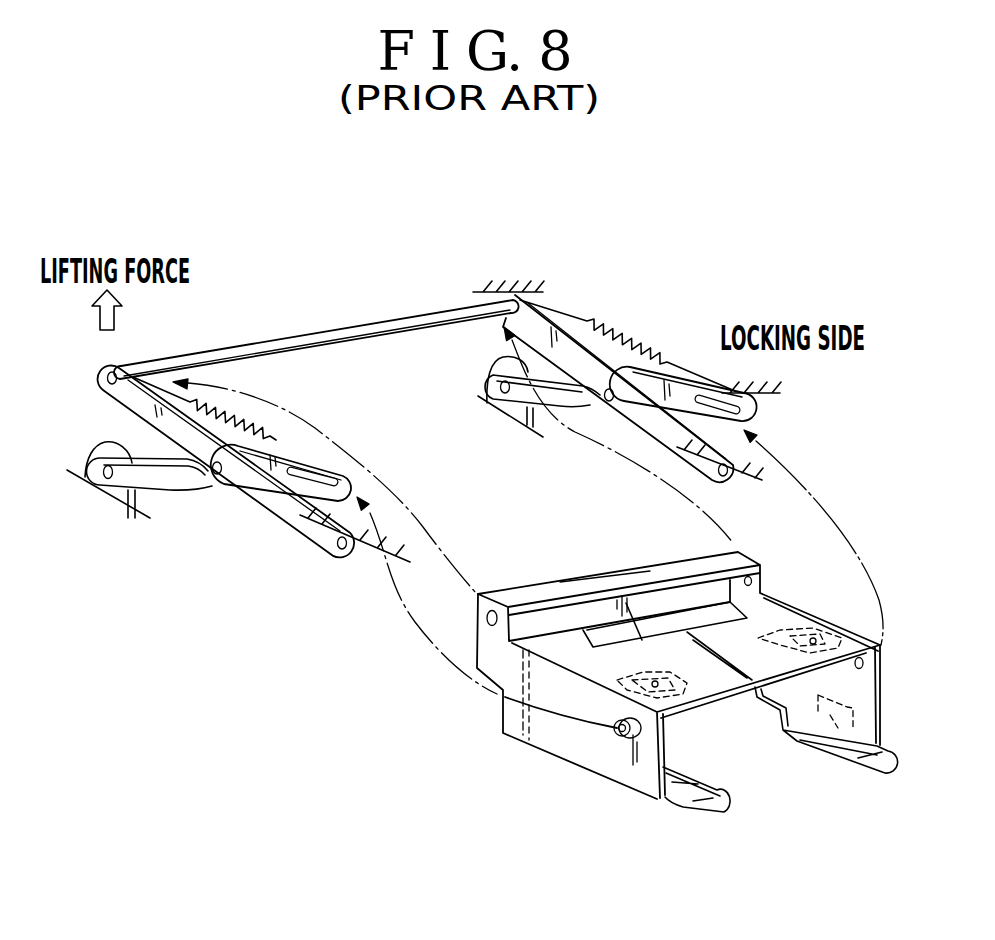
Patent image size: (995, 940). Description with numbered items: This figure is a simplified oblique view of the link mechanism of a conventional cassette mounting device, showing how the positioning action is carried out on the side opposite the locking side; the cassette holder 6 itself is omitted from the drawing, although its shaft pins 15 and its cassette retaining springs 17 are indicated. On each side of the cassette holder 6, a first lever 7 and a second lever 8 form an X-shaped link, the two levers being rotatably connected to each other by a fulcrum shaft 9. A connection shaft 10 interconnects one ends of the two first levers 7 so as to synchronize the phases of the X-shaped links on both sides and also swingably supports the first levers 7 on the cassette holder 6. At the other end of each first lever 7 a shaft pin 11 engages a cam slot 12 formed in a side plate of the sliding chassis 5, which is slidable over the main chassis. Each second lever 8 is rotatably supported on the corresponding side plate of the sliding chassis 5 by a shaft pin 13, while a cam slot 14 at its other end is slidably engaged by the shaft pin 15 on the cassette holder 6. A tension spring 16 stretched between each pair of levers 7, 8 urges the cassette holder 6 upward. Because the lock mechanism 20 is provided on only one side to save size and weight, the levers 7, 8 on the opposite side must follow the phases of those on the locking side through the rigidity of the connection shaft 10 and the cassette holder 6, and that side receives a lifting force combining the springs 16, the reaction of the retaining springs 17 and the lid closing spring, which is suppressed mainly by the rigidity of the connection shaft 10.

The sliding chassis 5 is at (140, 518).
The cassette holder 6 is at (570, 748).
The first lever 7 is at (132, 403).
The second lever 8 is at (184, 488).
The fulcrum shaft 9 is at (224, 488).
The connection shaft 10 is at (335, 330).
The shaft pin 11 is at (341, 556).
The cam slot 12 is at (405, 562).
The shaft pin 13 is at (100, 486).
The cam slot 14 is at (333, 477).
The shaft pin 15 is at (621, 742).
The tension spring 16 is at (270, 438).
The cassette retaining spring 17 is at (833, 628).
The lock mechanism 20 is at (831, 728).